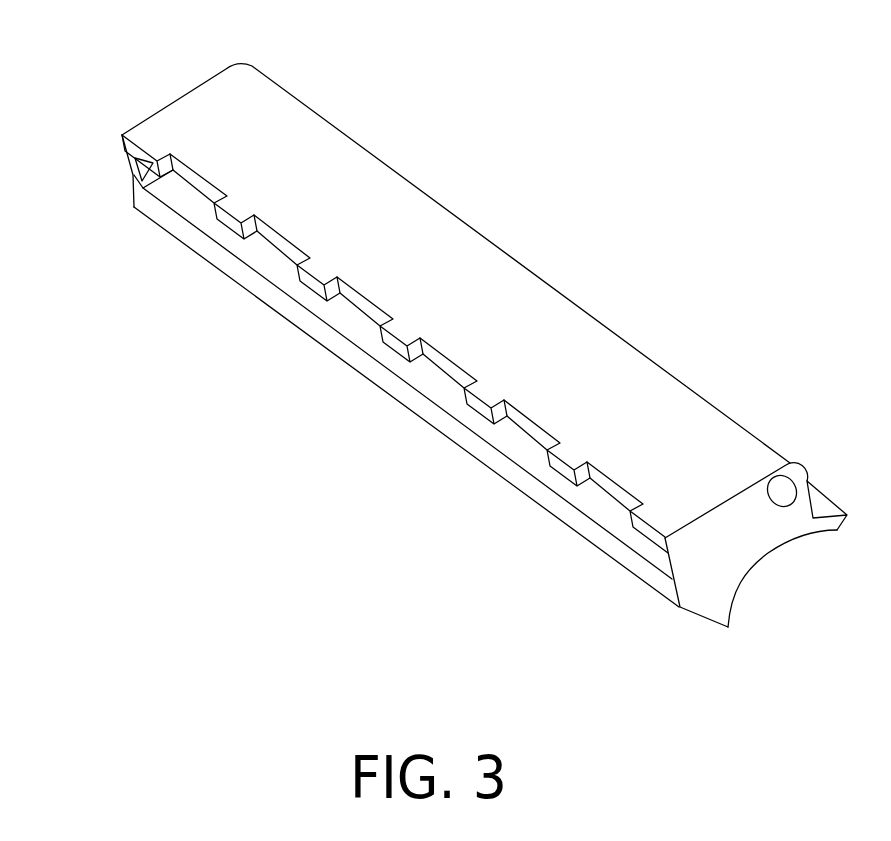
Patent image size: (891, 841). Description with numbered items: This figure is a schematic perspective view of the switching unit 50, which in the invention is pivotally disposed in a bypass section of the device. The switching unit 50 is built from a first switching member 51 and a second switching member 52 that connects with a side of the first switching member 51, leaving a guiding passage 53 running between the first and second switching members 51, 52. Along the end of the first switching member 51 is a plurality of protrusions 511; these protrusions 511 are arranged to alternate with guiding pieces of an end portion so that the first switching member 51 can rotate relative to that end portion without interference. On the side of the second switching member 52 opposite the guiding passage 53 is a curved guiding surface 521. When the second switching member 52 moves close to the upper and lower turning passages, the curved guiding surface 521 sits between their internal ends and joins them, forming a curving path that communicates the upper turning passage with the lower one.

The switching unit 50 is at (484, 402).
The first switching member 51 is at (662, 395).
The protrusions 511 is at (380, 338).
The second switching member 52 is at (537, 508).
The curved guiding surface 521 is at (763, 553).
The guiding passage 53 is at (513, 435).